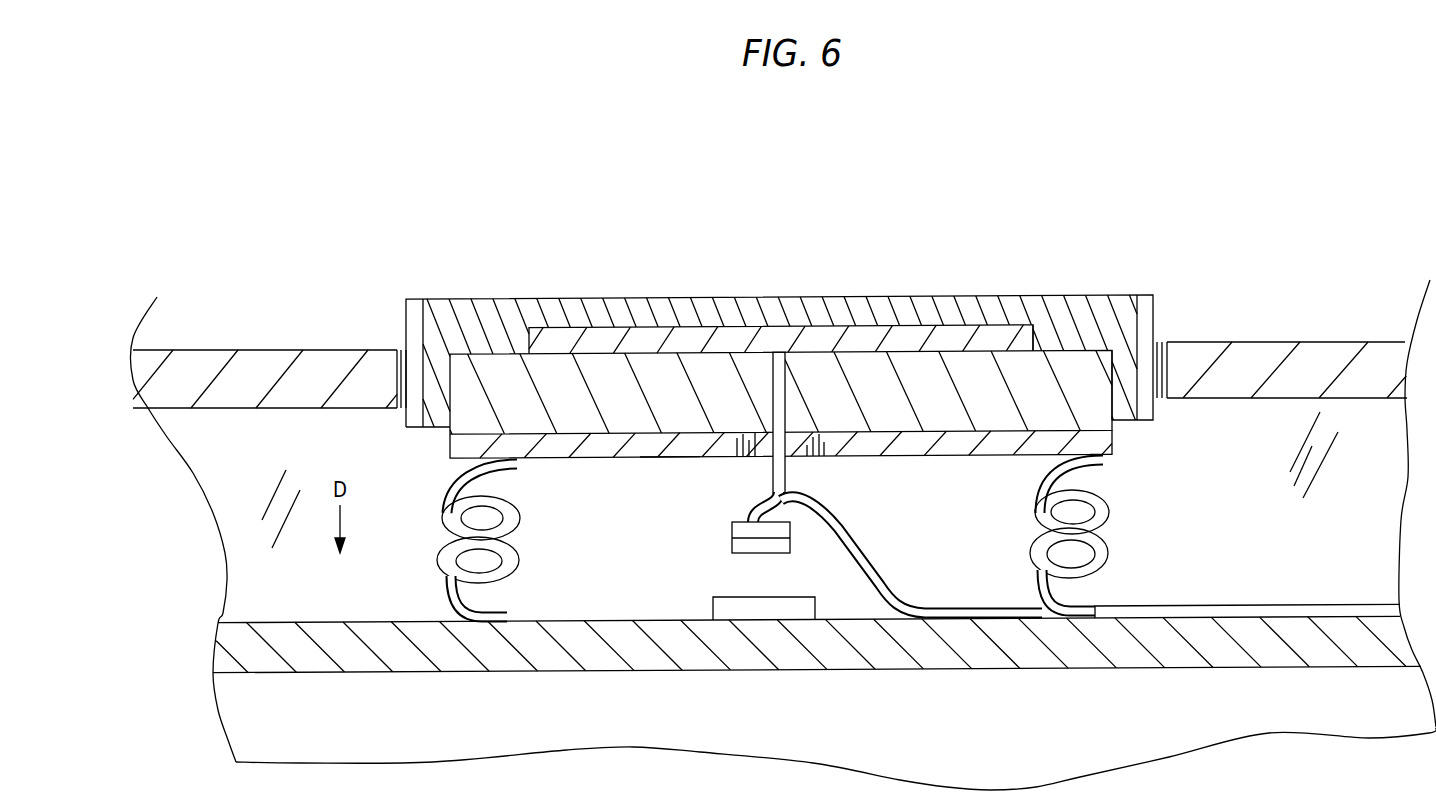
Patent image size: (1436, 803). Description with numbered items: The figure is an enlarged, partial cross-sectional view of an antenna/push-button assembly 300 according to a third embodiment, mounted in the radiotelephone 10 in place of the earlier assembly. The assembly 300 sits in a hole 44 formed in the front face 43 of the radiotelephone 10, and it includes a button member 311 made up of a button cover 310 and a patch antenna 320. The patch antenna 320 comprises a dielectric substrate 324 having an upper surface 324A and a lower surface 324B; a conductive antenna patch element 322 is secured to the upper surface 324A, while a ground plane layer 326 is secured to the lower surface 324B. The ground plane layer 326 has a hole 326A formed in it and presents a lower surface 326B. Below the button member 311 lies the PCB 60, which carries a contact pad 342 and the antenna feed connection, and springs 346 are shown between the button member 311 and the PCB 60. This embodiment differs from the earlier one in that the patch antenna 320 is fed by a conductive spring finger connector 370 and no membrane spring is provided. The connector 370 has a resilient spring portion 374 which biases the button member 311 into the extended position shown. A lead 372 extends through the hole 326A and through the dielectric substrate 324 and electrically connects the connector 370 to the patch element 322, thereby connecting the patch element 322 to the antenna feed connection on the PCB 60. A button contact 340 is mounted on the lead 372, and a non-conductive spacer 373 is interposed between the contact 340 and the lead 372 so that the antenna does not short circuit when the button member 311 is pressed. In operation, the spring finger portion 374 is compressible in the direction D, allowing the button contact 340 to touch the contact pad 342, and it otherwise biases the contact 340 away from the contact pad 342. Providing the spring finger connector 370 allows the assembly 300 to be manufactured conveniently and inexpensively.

The radiotelephone 10 is at (272, 188).
The antenna/push-button assembly 300 is at (933, 163).
The front face 43 is at (322, 350).
The hole 44 is at (396, 350).
The button cover 310 is at (500, 298).
The button member 311 is at (1158, 288).
The patch antenna 320 is at (441, 443).
The conductive antenna patch element 322 is at (700, 326).
The dielectric substrate 324 is at (1098, 353).
The upper surface 324A is at (1060, 342).
The lower surface 324B is at (1117, 445).
The ground plane layer 326 is at (605, 457).
The hole 326A is at (750, 457).
The lower surface 326B is at (680, 457).
The button contact 340 is at (740, 550).
The contact pad 342 is at (767, 612).
The spring 346 is at (442, 555).
The conductive spring finger connector 370 is at (963, 606).
The lead 372 is at (786, 380).
The non-conductive spacer 373 is at (736, 533).
The resilient spring portion 374 is at (835, 518).
The PCB 60 is at (993, 657).